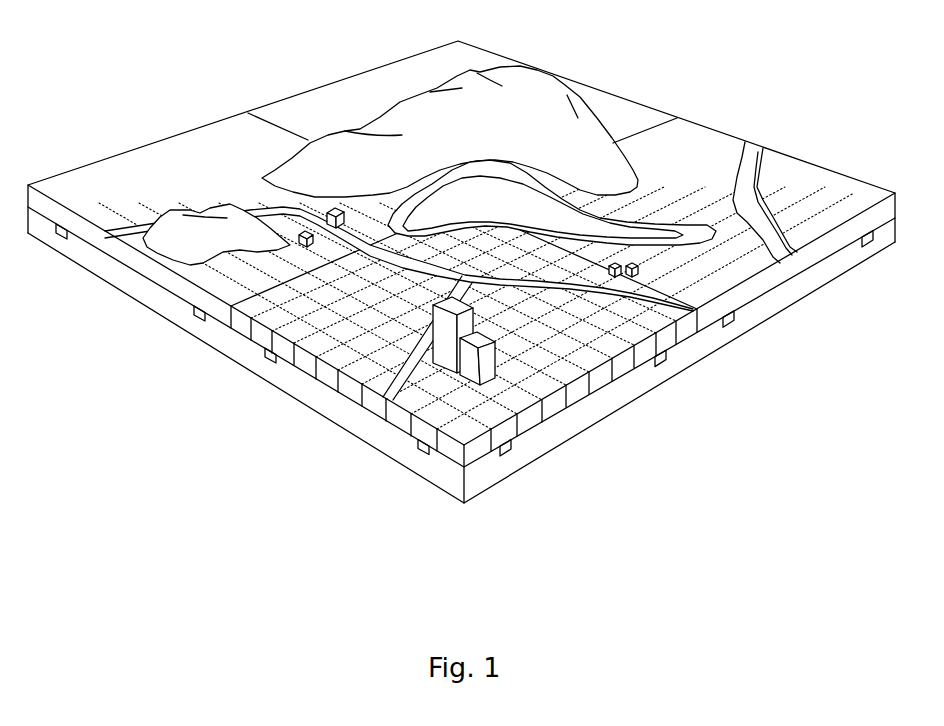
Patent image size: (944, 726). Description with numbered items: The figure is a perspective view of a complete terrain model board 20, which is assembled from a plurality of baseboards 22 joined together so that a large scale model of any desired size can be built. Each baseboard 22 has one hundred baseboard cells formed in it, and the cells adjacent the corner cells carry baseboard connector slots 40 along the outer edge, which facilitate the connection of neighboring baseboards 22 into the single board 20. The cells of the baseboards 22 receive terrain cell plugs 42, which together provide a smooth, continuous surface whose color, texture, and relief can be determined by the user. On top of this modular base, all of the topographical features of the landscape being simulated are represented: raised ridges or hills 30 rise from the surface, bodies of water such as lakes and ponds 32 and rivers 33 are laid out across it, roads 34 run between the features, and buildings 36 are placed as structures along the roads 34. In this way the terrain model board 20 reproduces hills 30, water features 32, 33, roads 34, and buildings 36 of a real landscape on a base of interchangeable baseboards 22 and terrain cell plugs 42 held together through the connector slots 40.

The terrain model board 20 is at (441, 514).
The baseboard 22 is at (88, 262).
The ridges or hills 30 is at (547, 92).
The lakes and ponds 32 is at (628, 220).
The rivers 33 is at (753, 167).
The roads 34 is at (693, 311).
The buildings 36 is at (304, 240).
The baseboard connector slots 40 is at (663, 362).
The terrain cell plugs 42 is at (620, 368).